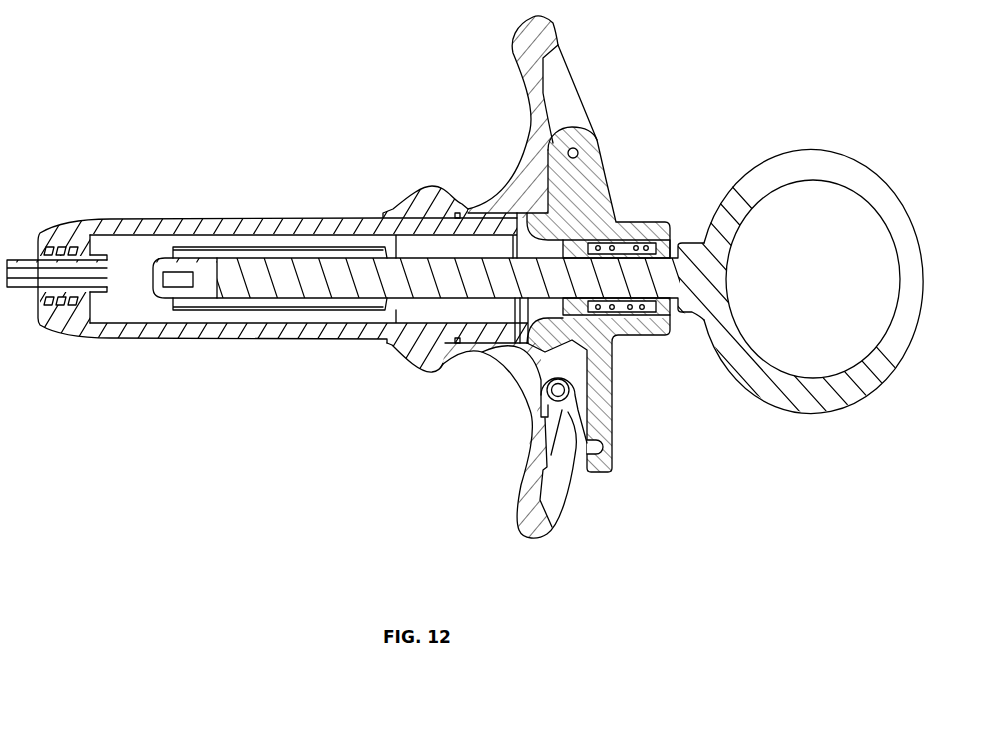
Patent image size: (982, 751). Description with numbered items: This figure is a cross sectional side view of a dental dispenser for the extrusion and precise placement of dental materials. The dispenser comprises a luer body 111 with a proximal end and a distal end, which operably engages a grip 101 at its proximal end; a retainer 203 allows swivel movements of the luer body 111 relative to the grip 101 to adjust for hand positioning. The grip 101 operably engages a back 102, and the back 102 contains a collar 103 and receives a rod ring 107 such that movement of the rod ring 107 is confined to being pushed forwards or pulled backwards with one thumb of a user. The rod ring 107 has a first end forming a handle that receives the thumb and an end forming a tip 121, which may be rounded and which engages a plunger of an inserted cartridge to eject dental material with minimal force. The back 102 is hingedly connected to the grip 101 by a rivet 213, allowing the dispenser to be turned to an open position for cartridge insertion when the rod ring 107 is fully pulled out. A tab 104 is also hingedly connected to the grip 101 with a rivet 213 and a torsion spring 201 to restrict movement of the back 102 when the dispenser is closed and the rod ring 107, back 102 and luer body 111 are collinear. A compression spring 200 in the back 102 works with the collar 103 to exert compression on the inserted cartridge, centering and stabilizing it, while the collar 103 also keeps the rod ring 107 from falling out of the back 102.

The grip 101 is at (397, 196).
The back 102 is at (618, 220).
The collar 103 is at (647, 233).
The tab 104 is at (607, 420).
The rod ring 107 is at (820, 152).
The luer body 111 is at (72, 225).
The tip 121 is at (167, 296).
The compression spring 200 is at (635, 322).
The torsion spring 201 is at (578, 425).
The retainer 203 is at (512, 315).
The rivet 213 is at (567, 150).